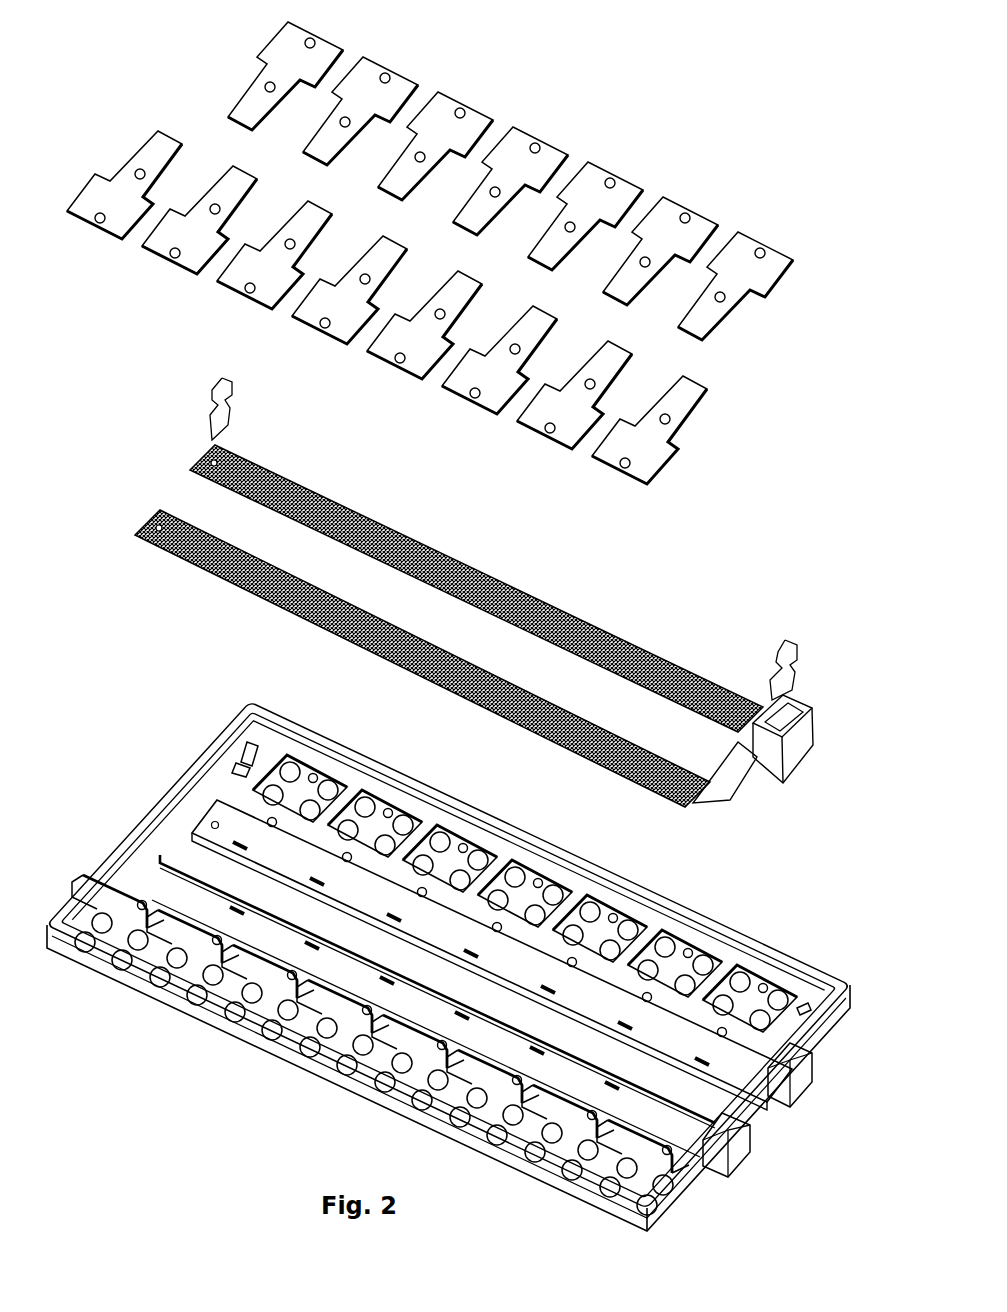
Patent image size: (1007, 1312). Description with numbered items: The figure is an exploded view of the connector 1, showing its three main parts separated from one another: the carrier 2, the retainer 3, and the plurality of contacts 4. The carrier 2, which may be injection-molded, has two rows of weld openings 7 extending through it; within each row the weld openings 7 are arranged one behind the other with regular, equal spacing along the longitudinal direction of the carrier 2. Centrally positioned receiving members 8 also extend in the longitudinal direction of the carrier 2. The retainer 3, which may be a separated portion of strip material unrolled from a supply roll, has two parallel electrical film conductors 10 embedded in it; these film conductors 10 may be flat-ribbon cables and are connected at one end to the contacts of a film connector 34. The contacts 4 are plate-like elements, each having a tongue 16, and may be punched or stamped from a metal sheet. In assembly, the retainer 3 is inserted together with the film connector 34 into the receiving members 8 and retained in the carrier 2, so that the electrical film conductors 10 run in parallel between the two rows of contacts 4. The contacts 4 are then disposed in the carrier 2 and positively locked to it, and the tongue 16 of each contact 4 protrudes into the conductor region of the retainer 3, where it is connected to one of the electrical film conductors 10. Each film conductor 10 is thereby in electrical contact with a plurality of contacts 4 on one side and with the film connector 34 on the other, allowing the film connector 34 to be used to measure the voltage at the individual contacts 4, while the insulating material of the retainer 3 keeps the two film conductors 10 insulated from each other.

The connector 1 is at (145, 47).
The carrier 2 is at (448, 966).
The retainer 3 is at (466, 592).
The contacts 4 is at (455, 253).
The weld openings 7 is at (742, 983).
The receiving members 8 is at (735, 1077).
The electrical film conductors 10 is at (478, 572).
The tongue 16 is at (710, 384).
The film connector 34 is at (798, 700).